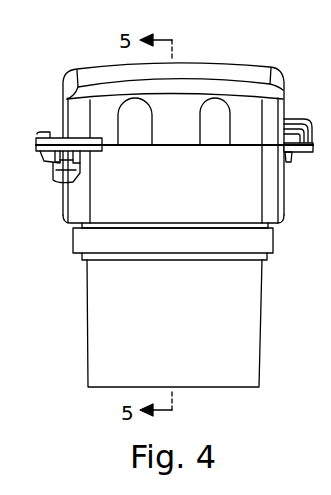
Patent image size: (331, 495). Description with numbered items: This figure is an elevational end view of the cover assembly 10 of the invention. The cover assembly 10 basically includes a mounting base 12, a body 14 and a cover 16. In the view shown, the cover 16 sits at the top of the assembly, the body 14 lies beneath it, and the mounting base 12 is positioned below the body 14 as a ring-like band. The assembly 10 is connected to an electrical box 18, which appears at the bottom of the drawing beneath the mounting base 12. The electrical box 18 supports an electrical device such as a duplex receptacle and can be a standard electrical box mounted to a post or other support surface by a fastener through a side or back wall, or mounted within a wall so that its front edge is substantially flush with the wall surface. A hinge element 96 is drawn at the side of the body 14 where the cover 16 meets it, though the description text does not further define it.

The cover assembly 10 is at (183, 203).
The mounting base 12 is at (73, 247).
The body 14 is at (63, 206).
The cover 16 is at (225, 66).
The electrical box 18 is at (88, 346).
The hinge 96 is at (330, 183).